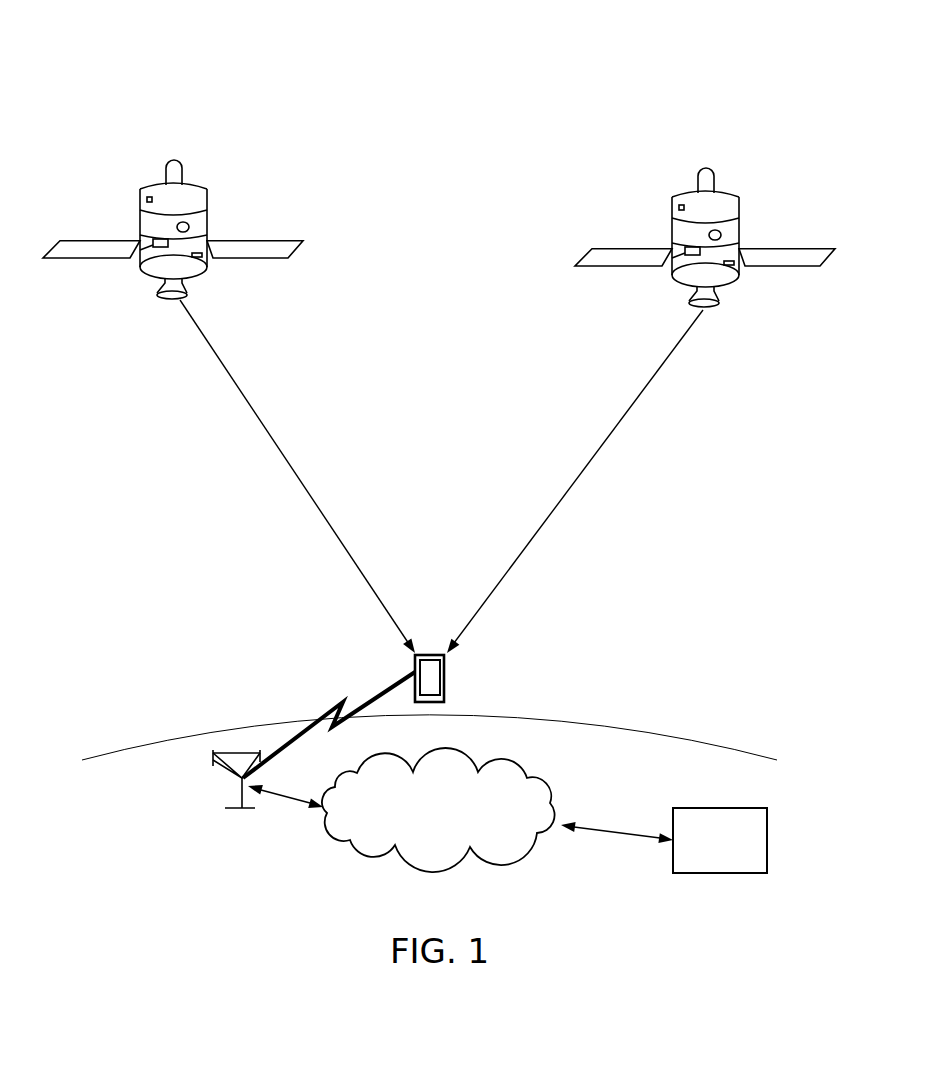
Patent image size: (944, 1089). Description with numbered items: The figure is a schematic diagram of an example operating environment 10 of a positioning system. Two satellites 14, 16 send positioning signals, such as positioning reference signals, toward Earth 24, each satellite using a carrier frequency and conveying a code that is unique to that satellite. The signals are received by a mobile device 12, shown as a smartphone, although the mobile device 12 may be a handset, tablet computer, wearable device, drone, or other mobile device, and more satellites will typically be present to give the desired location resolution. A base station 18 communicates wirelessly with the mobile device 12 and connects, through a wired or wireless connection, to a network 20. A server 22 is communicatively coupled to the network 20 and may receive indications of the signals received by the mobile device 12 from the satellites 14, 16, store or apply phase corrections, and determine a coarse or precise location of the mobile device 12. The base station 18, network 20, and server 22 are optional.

The operating environment 10 is at (668, 78).
The mobile device 12 is at (445, 685).
The satellite 14 is at (208, 199).
The satellite 16 is at (740, 208).
The base station 18 is at (229, 810).
The network 20 is at (350, 843).
The server 22 is at (767, 838).
The Earth 24 is at (603, 725).